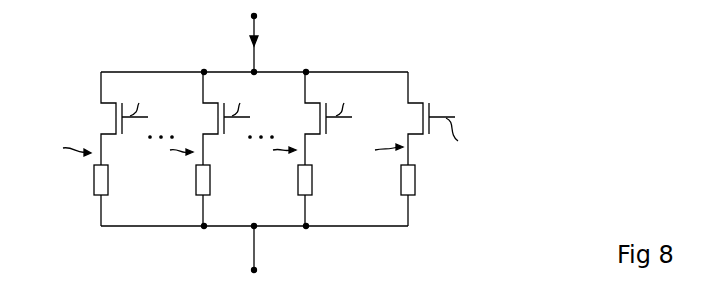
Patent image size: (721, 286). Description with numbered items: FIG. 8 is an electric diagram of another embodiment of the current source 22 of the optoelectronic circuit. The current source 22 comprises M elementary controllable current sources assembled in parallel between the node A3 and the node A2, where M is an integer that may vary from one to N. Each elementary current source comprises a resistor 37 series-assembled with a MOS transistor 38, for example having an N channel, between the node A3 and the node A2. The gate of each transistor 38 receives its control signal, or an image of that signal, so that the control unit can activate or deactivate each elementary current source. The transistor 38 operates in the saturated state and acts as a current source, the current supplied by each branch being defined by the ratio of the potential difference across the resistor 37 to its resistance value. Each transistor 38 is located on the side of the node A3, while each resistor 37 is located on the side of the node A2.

The current source 22 is at (285, 145).
The MOS transistor 38 is at (423, 104).
The resistor 37 is at (221, 181).
The node A3 is at (256, 17).
The node A2 is at (256, 270).